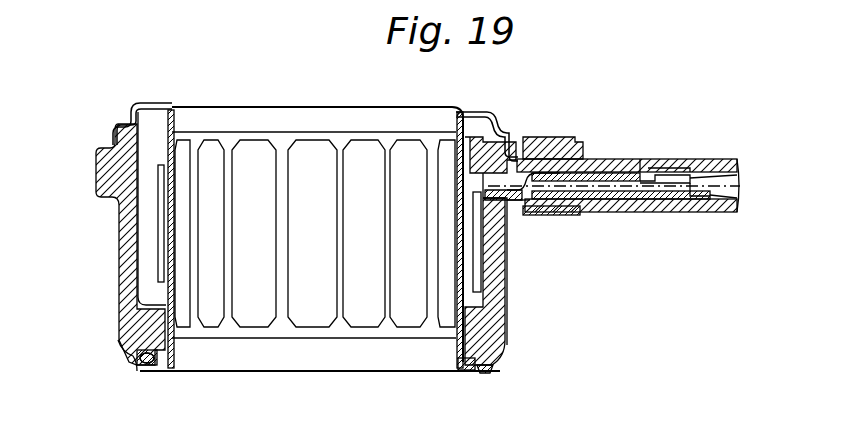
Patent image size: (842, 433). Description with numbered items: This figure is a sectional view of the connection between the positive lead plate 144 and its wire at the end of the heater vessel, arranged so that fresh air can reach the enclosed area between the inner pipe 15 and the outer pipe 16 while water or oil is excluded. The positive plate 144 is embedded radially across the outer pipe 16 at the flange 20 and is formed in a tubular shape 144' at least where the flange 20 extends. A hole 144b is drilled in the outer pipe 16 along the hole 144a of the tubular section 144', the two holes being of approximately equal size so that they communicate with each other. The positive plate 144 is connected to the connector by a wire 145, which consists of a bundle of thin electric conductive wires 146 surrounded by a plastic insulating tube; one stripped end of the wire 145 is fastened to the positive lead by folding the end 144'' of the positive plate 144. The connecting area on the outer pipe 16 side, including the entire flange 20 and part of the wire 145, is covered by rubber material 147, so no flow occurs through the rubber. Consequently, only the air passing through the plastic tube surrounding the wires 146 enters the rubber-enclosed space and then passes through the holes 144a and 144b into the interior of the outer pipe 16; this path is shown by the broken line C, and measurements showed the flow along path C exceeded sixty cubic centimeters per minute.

The inner pipe 15 is at (466, 107).
The outer pipe 16 is at (490, 338).
The flange 20 is at (511, 208).
The positive side lead plate 144 is at (628, 224).
The hole of the tubular section 144a is at (567, 218).
The hole in the outer pipe 144b is at (514, 152).
The tubular section 144' is at (578, 130).
The folded end of the positive plate 144'' is at (667, 140).
The wire 145 is at (740, 163).
The thin electric conductive wires 146 is at (687, 160).
The rubber material 147 is at (645, 212).
The air flow path C is at (737, 186).